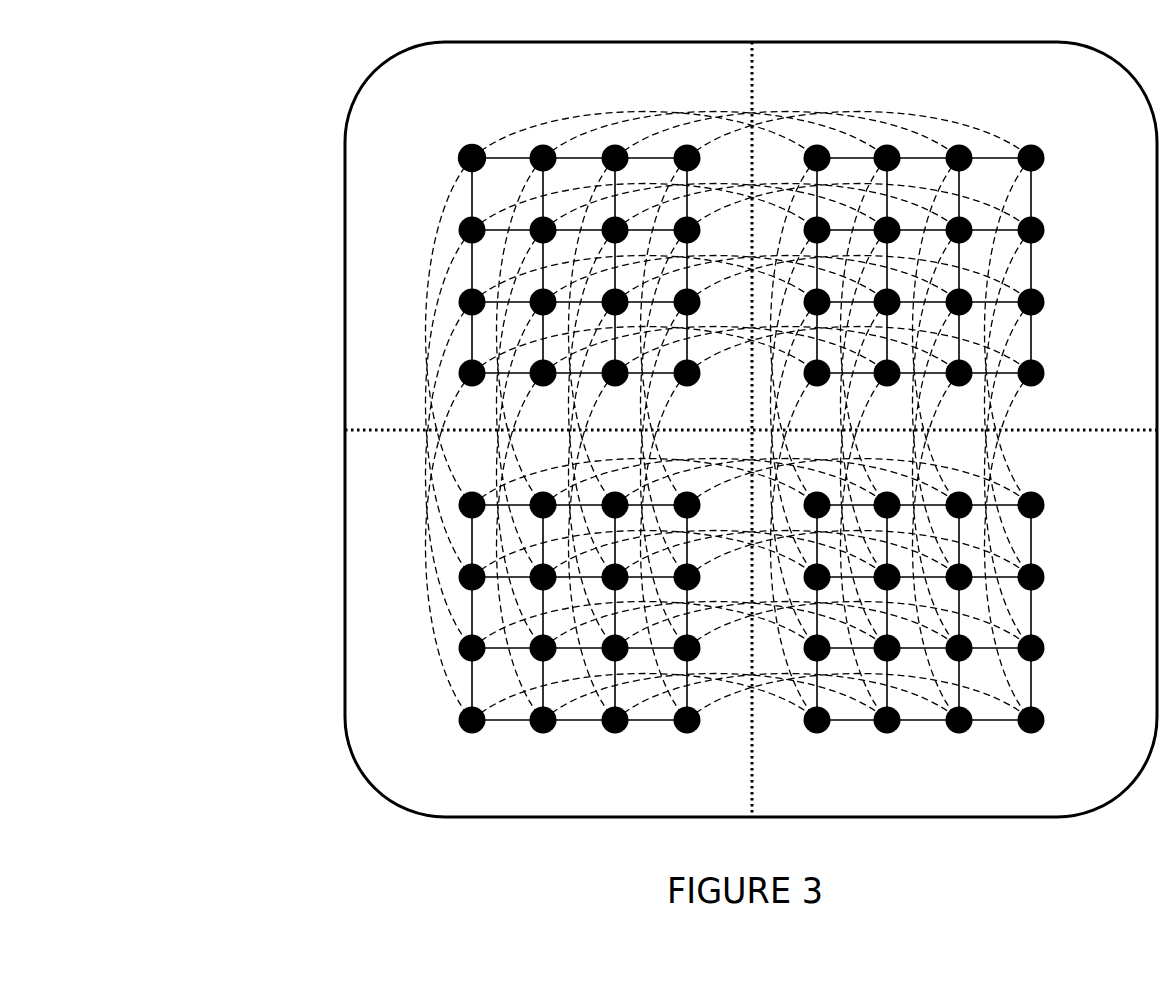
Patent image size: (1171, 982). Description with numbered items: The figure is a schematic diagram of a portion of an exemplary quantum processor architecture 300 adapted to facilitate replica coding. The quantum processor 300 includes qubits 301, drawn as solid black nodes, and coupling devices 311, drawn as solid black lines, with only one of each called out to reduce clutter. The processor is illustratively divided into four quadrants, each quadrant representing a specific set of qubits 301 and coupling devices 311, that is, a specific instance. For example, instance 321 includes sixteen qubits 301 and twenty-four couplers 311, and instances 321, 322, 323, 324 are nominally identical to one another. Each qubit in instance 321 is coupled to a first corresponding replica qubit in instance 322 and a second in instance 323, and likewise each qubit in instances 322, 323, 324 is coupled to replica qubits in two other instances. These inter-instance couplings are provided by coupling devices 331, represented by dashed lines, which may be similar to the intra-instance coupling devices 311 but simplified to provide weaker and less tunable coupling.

The quantum processor architecture 300 is at (212, 142).
The qubit 301 is at (428, 147).
The coupling device 311 is at (473, 264).
The instance 321 is at (529, 233).
The instance 322 is at (1048, 108).
The instance 323 is at (532, 785).
The instance 324 is at (1048, 786).
The inter-instance coupling device 331 is at (432, 593).